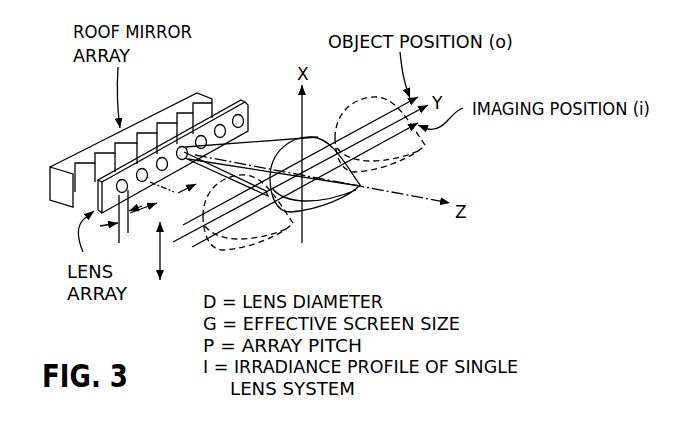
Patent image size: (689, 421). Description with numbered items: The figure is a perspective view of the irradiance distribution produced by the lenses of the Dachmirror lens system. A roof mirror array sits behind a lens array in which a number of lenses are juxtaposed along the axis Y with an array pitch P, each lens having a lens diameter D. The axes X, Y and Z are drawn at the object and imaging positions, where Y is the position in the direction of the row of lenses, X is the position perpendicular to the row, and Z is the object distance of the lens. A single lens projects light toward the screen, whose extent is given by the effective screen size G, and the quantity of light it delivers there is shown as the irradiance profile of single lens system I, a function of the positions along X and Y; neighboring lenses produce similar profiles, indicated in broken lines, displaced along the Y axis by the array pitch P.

The lens diameter D is at (121, 226).
The effective screen size G is at (153, 251).
The array pitch P is at (168, 196).
The irradiance profile of single lens system I is at (324, 205).